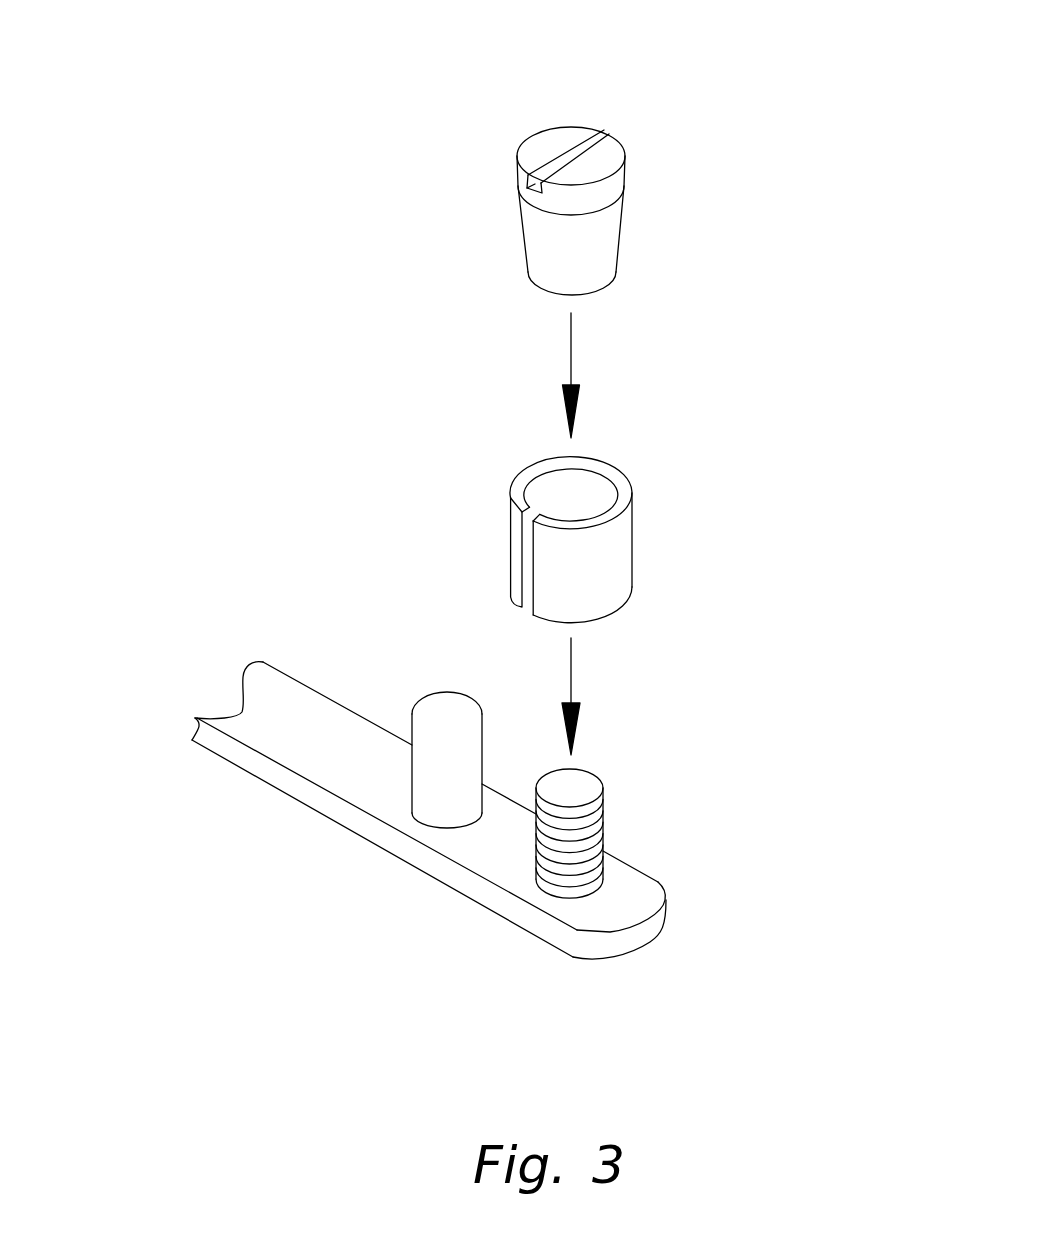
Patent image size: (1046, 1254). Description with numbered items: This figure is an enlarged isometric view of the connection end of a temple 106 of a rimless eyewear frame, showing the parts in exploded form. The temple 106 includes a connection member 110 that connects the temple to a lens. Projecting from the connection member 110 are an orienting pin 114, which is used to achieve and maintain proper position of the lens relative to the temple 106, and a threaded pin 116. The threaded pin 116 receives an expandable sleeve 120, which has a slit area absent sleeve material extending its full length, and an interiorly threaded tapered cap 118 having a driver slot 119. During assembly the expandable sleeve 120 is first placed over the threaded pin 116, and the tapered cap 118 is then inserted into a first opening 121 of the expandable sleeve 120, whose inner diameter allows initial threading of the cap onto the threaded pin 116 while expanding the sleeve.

The temple 106 is at (207, 810).
The connection member 110 is at (455, 890).
The orienting pin 114 is at (447, 692).
The threaded pin 116 is at (607, 800).
The tapered cap 118 is at (629, 172).
The driver slot 119 is at (568, 143).
The expandable sleeve 120 is at (624, 514).
The first opening 121 is at (578, 492).